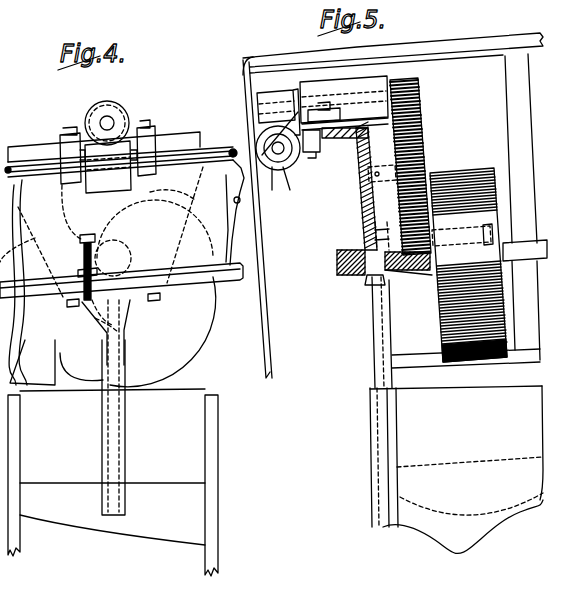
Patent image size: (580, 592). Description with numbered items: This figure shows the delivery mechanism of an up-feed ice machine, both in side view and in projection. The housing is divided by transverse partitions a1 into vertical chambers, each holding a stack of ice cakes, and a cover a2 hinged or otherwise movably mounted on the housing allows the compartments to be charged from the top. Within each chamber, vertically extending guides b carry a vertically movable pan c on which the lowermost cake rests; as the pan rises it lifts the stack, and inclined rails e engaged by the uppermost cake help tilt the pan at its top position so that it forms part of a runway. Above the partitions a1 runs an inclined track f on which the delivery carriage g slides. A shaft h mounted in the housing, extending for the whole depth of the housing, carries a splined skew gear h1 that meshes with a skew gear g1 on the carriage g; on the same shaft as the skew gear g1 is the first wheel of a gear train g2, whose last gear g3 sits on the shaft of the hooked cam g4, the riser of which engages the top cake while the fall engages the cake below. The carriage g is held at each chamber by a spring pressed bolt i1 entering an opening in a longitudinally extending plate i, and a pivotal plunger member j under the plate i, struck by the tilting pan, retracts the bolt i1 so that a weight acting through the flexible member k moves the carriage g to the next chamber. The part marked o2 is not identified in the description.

In FIG. 4, the transverse partition a1 is at (220, 492).
In FIG. 5, the transverse partition a1 is at (362, 435).
In FIG. 5, the cover a2 is at (447, 42).
In FIG. 4, the guide b is at (114, 448).
In FIG. 5, the pan c is at (393, 282).
In FIG. 4, the inclined rail e is at (190, 282).
In FIG. 5, the inclined rail e is at (515, 261).
In FIG. 4, the track f is at (108, 232).
In FIG. 4, the delivery carriage g is at (175, 140).
In FIG. 5, the delivery carriage g is at (357, 137).
In FIG. 4, the skew gear g1 is at (110, 107).
In FIG. 5, the skew gear g1 is at (265, 99).
In FIG. 5, the gear train g2 is at (418, 147).
In FIG. 5, the last gear g3 is at (427, 190).
In FIG. 4, the hooked cam g4 is at (138, 332).
In FIG. 5, the hooked cam g4 is at (440, 313).
In FIG. 4, the shaft h is at (27, 181).
In FIG. 5, the shaft h is at (294, 190).
In FIG. 4, the skew gear h1 is at (100, 163).
In FIG. 5, the skew gear h1 is at (278, 148).
In FIG. 5, the plate i is at (362, 276).
In FIG. 5, the spring pressed bolt i1 is at (360, 248).
In FIG. 4, the pivotal plunger member j is at (92, 318).
In FIG. 5, the pivotal plunger member j is at (378, 282).
In FIG. 4, the flexible member k is at (237, 212).
In FIG. 4, the bolt o2 is at (84, 268).